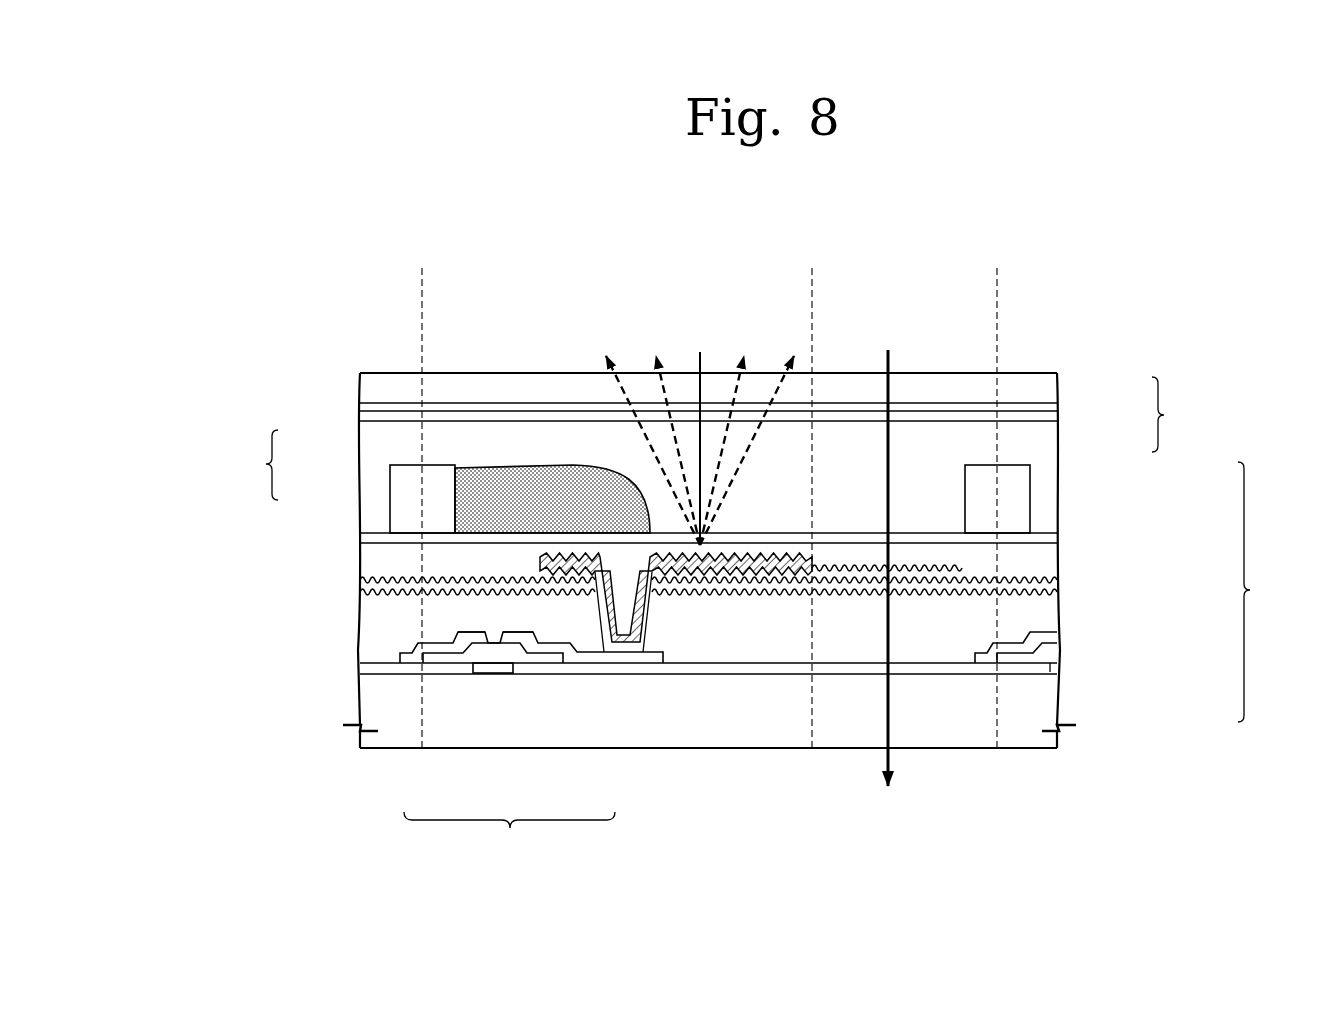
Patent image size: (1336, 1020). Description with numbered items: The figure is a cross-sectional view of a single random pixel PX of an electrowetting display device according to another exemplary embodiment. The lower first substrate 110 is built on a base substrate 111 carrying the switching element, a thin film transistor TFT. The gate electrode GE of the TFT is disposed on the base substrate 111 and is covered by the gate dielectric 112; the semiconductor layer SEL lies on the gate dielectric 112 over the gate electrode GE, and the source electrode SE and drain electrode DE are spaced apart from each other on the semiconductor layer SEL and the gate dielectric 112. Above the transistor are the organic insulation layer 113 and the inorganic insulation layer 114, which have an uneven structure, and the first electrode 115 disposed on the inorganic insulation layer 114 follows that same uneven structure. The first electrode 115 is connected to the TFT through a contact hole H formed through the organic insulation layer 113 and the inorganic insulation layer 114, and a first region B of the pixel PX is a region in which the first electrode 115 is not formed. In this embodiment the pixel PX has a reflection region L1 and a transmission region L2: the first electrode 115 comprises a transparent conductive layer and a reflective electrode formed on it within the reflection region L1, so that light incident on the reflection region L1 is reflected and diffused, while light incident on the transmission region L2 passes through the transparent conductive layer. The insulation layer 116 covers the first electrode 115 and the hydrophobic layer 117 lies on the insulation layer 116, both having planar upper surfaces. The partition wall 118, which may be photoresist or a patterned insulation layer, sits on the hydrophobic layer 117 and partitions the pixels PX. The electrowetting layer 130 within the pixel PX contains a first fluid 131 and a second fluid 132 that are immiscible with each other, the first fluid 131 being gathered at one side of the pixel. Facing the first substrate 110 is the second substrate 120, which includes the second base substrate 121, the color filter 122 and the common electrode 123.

The first substrate 110 is at (1268, 592).
The base substrate 111 is at (1047, 707).
The gate dielectric 112 is at (1043, 667).
The organic insulation layer 113 is at (1063, 629).
The inorganic insulation layer 114 is at (1043, 620).
The first electrode 115 is at (1174, 549).
The insulation layer 116 is at (1045, 550).
The hydrophobic layer 117 is at (1045, 539).
The partition wall 118 is at (1018, 473).
The second substrate 120 is at (1183, 414).
The second base substrate 121 is at (1045, 389).
The color filter 122 is at (1040, 409).
The common electrode 123 is at (1035, 421).
The electrowetting layer 130 is at (250, 465).
The first fluid 131 is at (475, 493).
The second fluid 132 is at (390, 443).
The pixel PX is at (424, 275).
The reflection region L1 is at (810, 311).
The transmission region L2 is at (814, 311).
The first region B is at (455, 546).
The contact hole H is at (623, 582).
The source electrode SE is at (415, 648).
The gate electrode GE is at (492, 673).
The semiconductor layer SEL is at (545, 658).
The drain electrode DE is at (597, 658).
The thin film transistor TFT is at (509, 835).